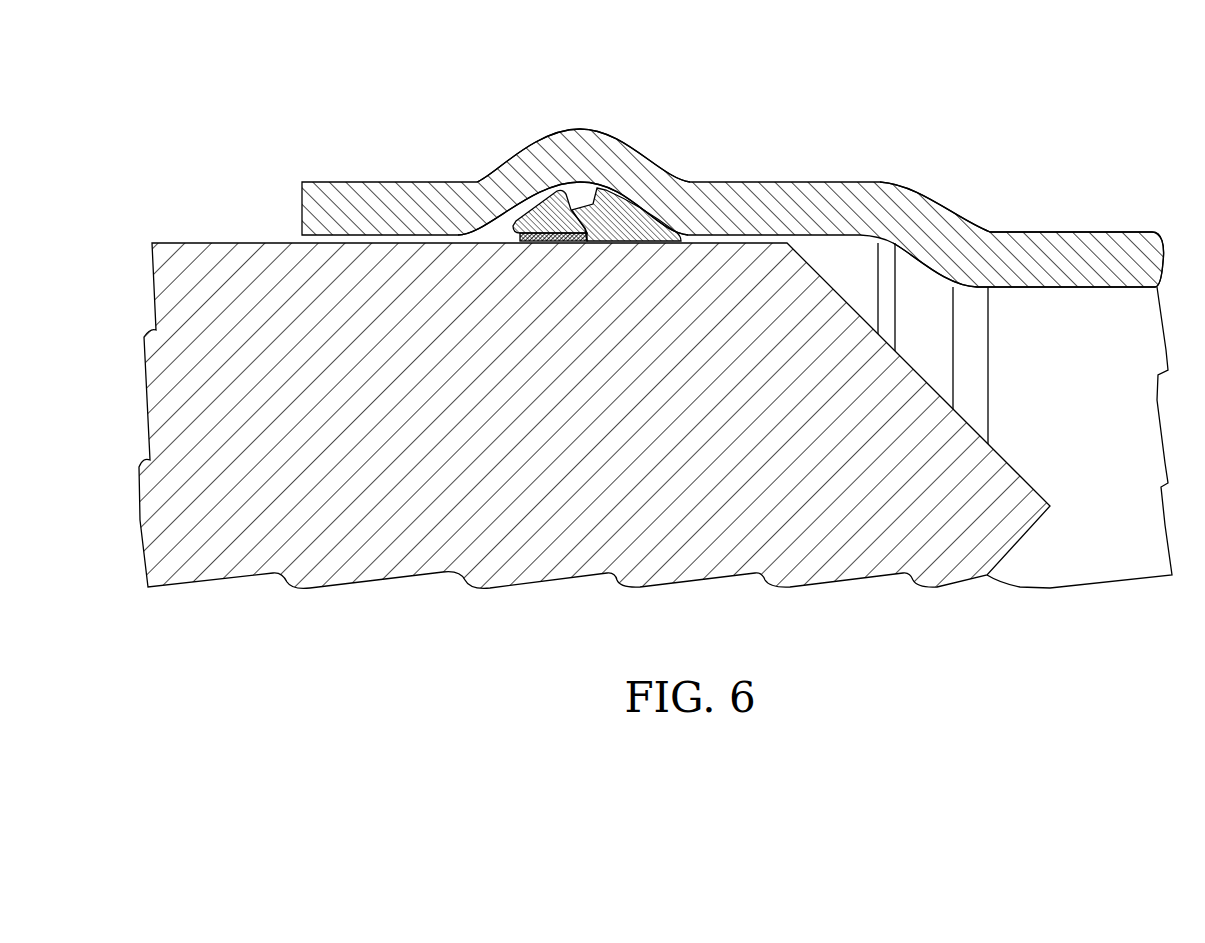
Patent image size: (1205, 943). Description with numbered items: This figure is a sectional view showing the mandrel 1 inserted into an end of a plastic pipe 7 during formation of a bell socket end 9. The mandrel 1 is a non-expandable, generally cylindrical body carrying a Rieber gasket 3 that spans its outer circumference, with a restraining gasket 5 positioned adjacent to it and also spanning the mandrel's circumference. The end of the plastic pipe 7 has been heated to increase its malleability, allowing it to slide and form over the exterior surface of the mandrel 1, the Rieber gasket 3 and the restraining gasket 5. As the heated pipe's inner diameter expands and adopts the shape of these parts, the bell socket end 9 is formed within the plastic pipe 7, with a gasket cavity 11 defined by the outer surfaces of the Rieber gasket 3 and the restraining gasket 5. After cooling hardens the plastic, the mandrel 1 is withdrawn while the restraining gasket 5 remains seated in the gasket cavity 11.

The mandrel 1 is at (207, 233).
The Rieber gasket 3 is at (622, 198).
The restraining gasket 5 is at (539, 197).
The plastic pipe 7 is at (1063, 227).
The bell socket end 9 is at (745, 178).
The gasket cavity 11 is at (577, 125).